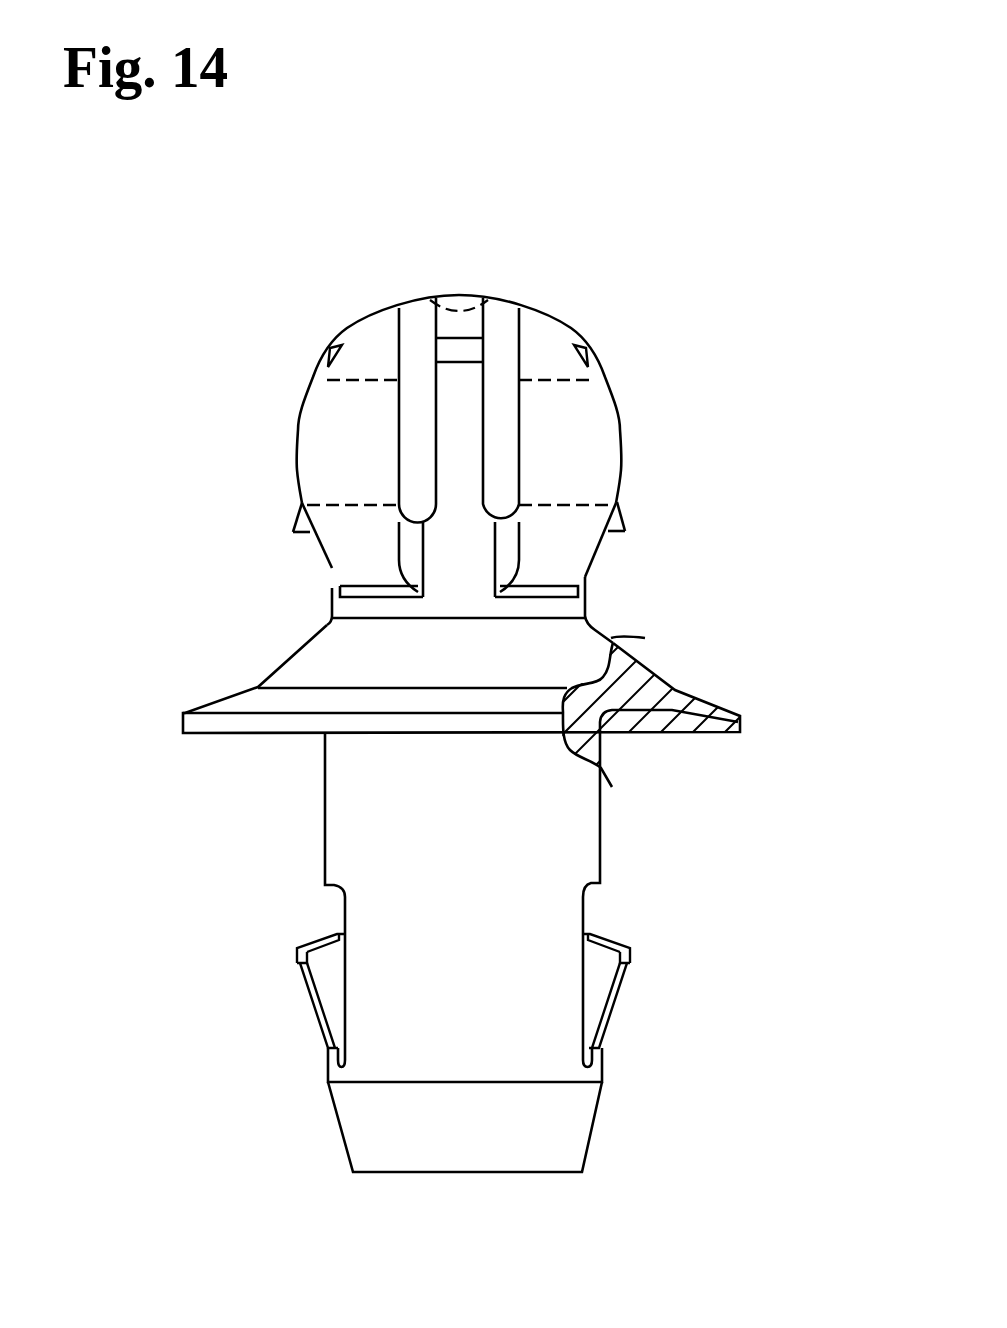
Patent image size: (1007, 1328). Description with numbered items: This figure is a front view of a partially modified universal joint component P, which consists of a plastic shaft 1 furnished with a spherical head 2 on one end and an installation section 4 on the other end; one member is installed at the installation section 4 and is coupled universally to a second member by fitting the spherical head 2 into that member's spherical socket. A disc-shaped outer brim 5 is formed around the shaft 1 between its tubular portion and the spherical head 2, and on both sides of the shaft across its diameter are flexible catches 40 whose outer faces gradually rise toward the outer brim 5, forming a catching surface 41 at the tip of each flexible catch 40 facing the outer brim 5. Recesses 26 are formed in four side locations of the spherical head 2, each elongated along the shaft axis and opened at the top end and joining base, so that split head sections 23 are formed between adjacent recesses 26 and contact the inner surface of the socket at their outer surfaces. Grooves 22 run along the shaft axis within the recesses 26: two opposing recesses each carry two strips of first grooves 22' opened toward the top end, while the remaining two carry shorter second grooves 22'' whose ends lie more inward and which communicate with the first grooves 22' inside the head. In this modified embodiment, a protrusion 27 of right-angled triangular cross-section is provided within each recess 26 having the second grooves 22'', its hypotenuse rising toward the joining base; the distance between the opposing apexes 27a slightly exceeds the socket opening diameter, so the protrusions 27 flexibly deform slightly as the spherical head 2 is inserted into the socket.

The universal joint component P is at (634, 237).
The shaft 1 is at (557, 827).
The spherical head 2 is at (350, 402).
The installation section 4 is at (678, 963).
The outer brim 5 is at (741, 712).
The grooves 22 is at (351, 341).
The first grooves 22' is at (545, 334).
The second grooves 22'' is at (487, 422).
The split head sections 23 is at (342, 480).
The recesses 26 is at (475, 553).
The protrusion 27 is at (294, 523).
The apex 27a is at (295, 527).
The flexible catch 40 is at (313, 1003).
The catching surface 41 is at (310, 950).